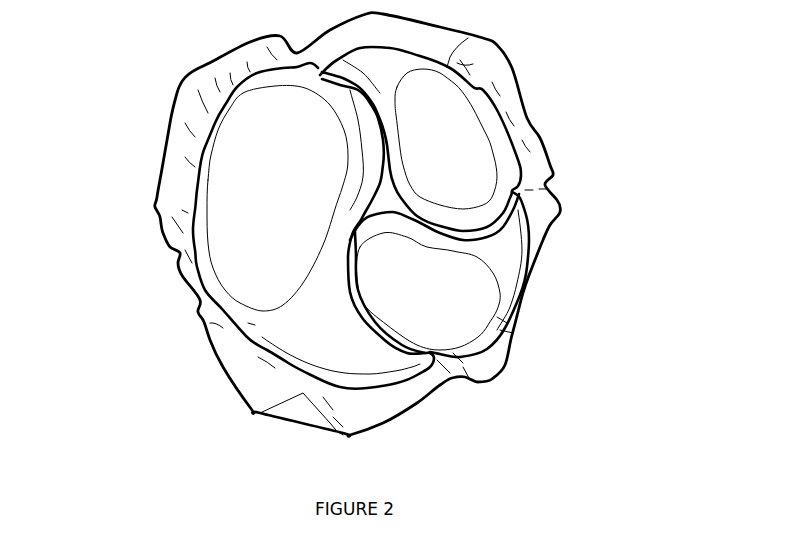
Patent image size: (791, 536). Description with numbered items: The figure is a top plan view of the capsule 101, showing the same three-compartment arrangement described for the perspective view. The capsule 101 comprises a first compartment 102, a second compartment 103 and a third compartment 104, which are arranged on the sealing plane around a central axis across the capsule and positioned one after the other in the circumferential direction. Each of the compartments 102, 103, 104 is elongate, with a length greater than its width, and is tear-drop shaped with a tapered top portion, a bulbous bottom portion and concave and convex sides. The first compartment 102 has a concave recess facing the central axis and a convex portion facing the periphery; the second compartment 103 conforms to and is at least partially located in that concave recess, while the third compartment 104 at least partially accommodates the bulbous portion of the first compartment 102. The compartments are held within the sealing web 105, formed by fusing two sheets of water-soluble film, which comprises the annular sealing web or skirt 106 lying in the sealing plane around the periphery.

The capsule 101 is at (352, 225).
The first compartment 102 is at (220, 233).
The second compartment 103 is at (490, 293).
The third compartment 104 is at (473, 117).
The sealing web 105 is at (483, 70).
The annular sealing web or skirt 106 is at (203, 68).